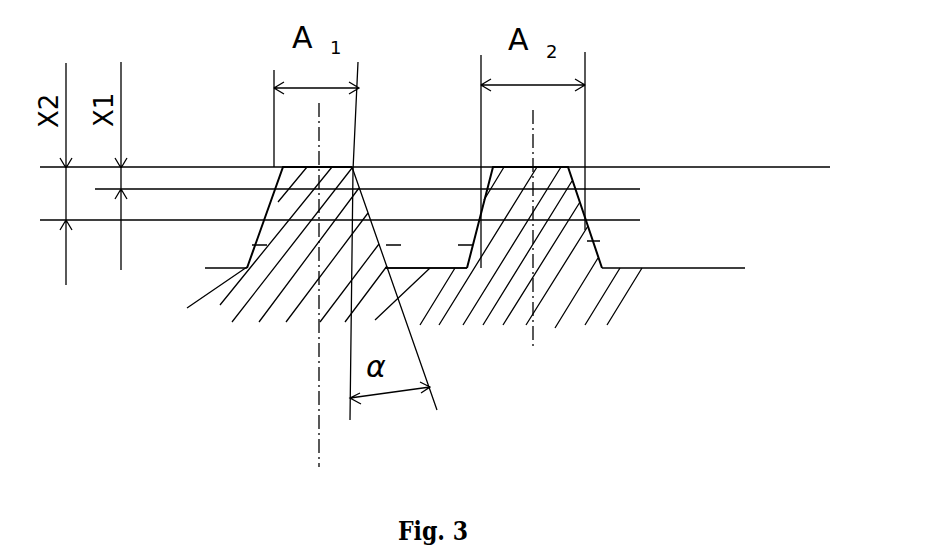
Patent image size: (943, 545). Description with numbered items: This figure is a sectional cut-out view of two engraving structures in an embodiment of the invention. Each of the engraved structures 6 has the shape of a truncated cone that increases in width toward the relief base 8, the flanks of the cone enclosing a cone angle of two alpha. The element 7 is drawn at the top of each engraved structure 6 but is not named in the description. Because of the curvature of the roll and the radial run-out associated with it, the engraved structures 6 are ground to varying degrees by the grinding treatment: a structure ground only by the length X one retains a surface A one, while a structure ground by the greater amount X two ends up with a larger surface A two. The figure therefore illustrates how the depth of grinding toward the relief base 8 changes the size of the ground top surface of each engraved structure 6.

The engraved structures 6 is at (272, 206).
The tooth tip 7 is at (343, 151).
The relief base 8 is at (419, 256).